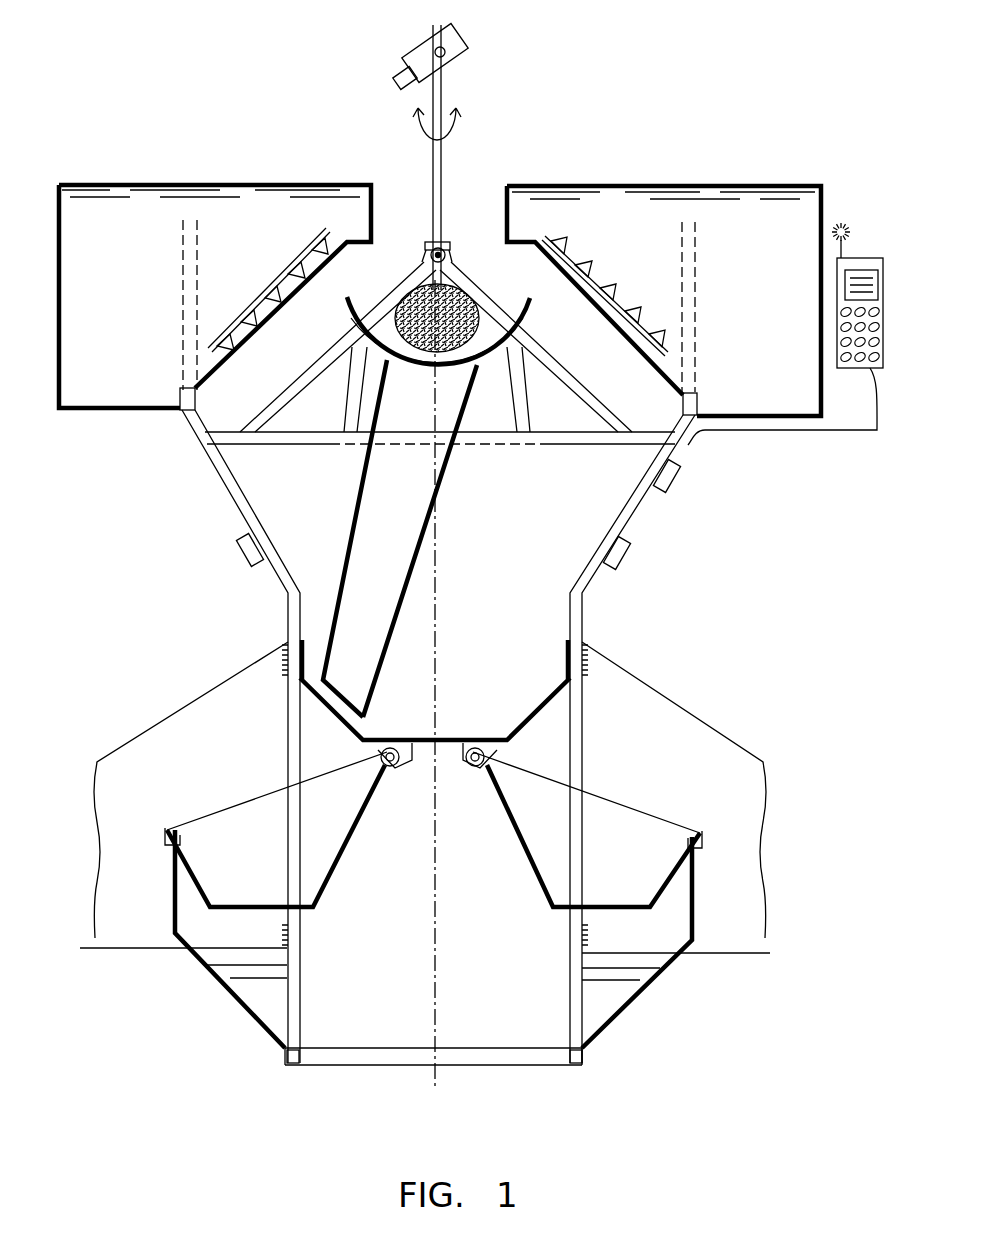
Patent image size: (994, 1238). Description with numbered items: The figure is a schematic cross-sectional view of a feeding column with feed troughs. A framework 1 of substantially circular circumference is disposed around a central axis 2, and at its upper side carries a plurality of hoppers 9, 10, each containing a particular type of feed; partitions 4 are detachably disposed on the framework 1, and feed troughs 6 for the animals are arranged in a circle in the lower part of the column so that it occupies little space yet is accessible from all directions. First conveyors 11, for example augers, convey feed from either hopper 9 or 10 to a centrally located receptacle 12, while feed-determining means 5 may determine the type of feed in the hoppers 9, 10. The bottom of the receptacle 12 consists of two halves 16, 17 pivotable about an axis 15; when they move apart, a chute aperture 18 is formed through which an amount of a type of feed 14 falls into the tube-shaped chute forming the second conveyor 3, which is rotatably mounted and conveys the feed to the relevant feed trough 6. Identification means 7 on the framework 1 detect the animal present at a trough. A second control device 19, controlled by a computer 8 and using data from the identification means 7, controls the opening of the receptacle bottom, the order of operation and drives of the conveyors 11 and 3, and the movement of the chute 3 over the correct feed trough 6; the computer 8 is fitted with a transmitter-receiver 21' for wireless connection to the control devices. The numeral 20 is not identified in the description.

The framework 1 is at (558, 952).
The central axis 2 is at (432, 1005).
The second conveyor 3 is at (440, 485).
The partitions 4 is at (183, 728).
The feed-determining means 5 is at (448, 45).
The feed troughs 6 is at (240, 820).
The identification means 7 is at (253, 553).
The computer 8 is at (858, 414).
The hopper 9 is at (248, 197).
The hopper 10 is at (632, 200).
The first conveyors 11 is at (290, 262).
The receptacle 12 is at (530, 365).
The type of feed 14 is at (455, 292).
The axis 15 is at (447, 254).
The half of receptacle bottom 16 is at (395, 305).
The half of receptacle bottom 17 is at (482, 307).
The chute aperture 18 is at (515, 348).
The second control device 19 is at (667, 475).
The drive shaft 20 is at (432, 246).
The transmitter-receiver 21' is at (861, 217).